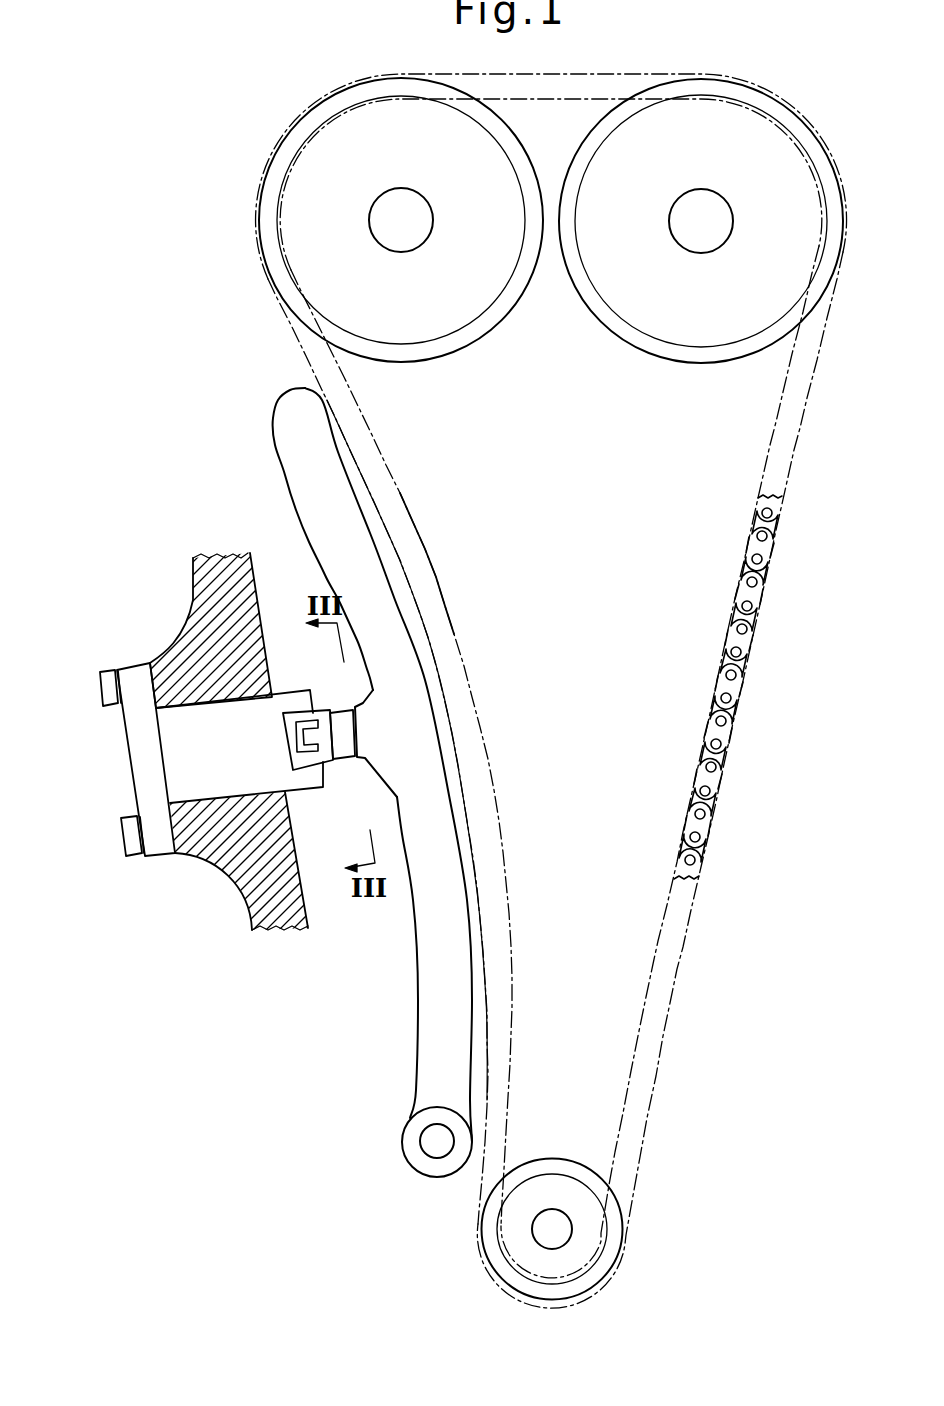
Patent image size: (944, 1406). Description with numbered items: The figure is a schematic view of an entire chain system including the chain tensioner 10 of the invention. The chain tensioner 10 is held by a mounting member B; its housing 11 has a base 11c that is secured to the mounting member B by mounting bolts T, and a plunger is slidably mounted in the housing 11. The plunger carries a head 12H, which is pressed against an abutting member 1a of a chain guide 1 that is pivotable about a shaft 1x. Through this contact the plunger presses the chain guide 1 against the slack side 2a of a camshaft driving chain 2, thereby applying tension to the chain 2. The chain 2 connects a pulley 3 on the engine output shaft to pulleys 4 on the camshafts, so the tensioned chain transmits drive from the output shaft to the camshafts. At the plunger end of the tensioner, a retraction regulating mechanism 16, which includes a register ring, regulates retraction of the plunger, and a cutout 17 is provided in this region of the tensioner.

The chain guide 1 is at (431, 983).
The abutting member 1a is at (363, 722).
The shaft 1x is at (435, 1148).
The camshaft driving chain 2 is at (753, 602).
The slack side 2a is at (432, 572).
The pulley 3 is at (557, 1187).
The pulleys 4 is at (470, 303).
The chain tensioner 10 is at (298, 707).
The housing 11 is at (182, 765).
The base 11c is at (138, 728).
The head 12H is at (348, 738).
The retraction regulating mechanism 16 is at (317, 706).
The cutout 17 is at (318, 768).
The mounting member B is at (198, 582).
The mounting bolts T is at (108, 686).